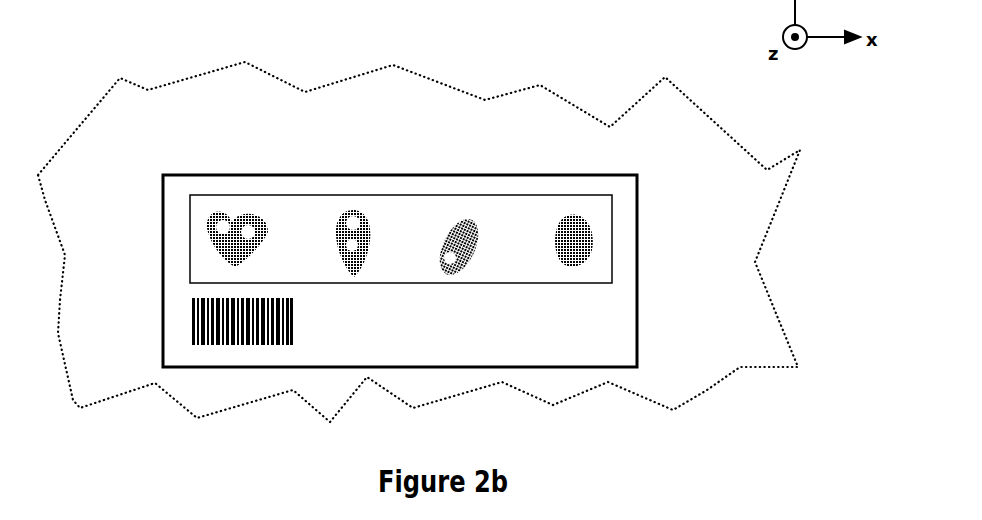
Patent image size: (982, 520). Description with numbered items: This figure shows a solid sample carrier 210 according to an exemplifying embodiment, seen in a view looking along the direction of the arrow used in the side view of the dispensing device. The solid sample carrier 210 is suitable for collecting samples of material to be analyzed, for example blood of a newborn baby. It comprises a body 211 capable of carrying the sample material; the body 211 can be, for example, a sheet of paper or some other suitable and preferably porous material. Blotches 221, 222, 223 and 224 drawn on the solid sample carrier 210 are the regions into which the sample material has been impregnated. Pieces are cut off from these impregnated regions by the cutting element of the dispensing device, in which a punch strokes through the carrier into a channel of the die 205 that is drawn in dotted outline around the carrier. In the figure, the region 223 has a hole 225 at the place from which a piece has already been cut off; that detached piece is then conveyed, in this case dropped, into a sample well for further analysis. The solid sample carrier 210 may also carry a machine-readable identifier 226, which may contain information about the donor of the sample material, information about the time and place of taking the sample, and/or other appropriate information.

The die 205 is at (715, 204).
The solid sample carrier 210 is at (563, 385).
The body 211 is at (637, 273).
The blotch 221 is at (220, 213).
The blotch 222 is at (353, 213).
The blotch 223 is at (423, 197).
The blotch 224 is at (575, 222).
The hole 225 is at (445, 257).
The machine-readable identifier 226 is at (192, 332).